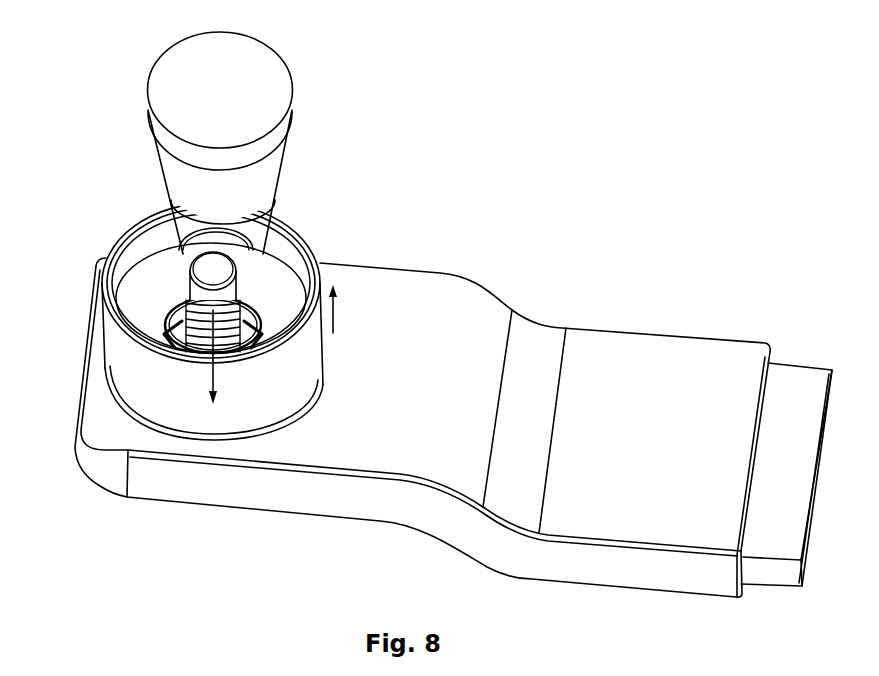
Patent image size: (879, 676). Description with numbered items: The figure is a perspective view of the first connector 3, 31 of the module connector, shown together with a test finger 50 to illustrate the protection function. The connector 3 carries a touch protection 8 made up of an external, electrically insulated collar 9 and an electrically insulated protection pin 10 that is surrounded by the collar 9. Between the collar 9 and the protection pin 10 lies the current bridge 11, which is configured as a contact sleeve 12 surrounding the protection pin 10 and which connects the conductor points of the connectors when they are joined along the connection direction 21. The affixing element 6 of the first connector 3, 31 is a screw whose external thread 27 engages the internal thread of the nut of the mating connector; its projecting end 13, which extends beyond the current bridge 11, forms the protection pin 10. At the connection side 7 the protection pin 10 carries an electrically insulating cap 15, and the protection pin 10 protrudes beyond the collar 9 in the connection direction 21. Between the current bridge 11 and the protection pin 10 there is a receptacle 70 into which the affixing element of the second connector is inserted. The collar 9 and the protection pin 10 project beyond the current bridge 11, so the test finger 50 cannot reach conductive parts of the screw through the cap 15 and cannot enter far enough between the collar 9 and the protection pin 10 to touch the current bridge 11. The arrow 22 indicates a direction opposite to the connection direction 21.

The connector 3 is at (422, 427).
The first connector 31 is at (54, 406).
The affixing element 6 is at (178, 262).
The connection side 7 is at (79, 254).
The touch protection 8 is at (64, 345).
The collar 9 is at (193, 413).
The protection pin 10 is at (279, 273).
The current bridge 11 is at (307, 442).
The contact sleeve 12 is at (279, 319).
The projecting end 13 is at (279, 319).
The electrically insulating cap 15 is at (255, 255).
The connection direction 21 is at (334, 313).
The direction of insertion 22 is at (217, 375).
The external thread 27 is at (115, 302).
The test finger 50 is at (288, 123).
The receptacle 70 is at (176, 339).